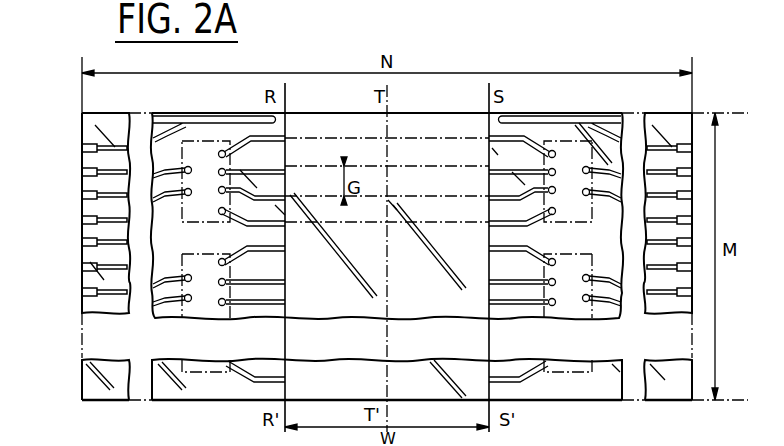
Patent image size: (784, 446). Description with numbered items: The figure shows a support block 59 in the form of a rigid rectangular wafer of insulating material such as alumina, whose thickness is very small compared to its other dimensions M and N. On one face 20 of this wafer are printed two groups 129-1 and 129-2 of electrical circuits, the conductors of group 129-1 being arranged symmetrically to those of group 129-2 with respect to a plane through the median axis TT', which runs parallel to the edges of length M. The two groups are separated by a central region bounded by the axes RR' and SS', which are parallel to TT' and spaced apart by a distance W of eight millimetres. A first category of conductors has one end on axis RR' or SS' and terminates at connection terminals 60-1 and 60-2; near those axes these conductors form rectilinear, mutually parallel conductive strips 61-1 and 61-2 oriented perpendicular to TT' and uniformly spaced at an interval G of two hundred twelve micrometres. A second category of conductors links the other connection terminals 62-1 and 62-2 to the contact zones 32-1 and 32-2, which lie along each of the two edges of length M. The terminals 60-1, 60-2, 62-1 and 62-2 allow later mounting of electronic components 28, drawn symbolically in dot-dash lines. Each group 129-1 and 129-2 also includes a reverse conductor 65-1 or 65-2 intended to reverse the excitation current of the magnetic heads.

The face of the wafer 20 is at (112, 392).
The electronic components 28 is at (562, 254).
The contact zones 32-1 is at (84, 293).
The contact zones 32-2 is at (682, 295).
The support block 59 is at (396, 128).
The connection terminals 60-1 is at (224, 150).
The connection terminals 60-2 is at (550, 150).
The conductive strips 61-1 is at (283, 270).
The conductive strips 61-2 is at (490, 300).
The connection terminals 62-1 is at (176, 150).
The connection terminals 62-2 is at (598, 150).
The reverse conductor 65-1 is at (278, 122).
The reverse conductor 65-2 is at (491, 128).
The group of printed electrical circuits 129-1 is at (258, 312).
The group of printed electrical circuits 129-2 is at (598, 340).